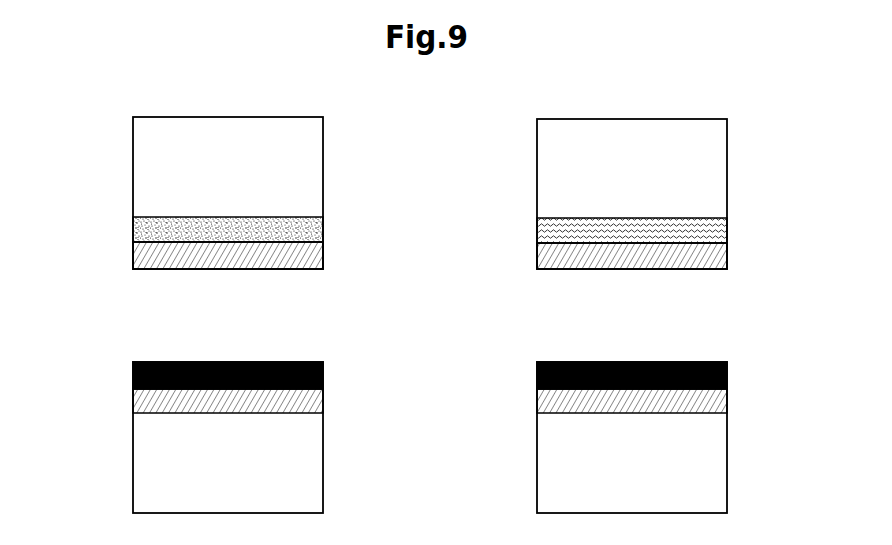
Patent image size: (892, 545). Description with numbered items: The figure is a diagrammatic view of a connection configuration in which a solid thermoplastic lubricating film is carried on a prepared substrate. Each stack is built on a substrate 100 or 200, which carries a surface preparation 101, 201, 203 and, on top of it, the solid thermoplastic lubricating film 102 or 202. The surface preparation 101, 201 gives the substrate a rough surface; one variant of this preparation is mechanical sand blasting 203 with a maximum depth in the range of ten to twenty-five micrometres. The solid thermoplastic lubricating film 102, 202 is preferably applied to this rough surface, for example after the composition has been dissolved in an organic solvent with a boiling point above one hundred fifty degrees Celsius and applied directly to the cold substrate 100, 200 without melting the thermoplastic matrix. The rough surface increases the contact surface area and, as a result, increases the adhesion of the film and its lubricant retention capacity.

The substrate 100 is at (323, 465).
The surface preparation 101 is at (323, 400).
The solid thermoplastic lubricating film 102 is at (133, 375).
The substrate 200 is at (323, 167).
The surface preparation 201 is at (323, 228).
The solid thermoplastic lubricating film 202 is at (133, 255).
The surface preparation by mechanical sand blasting 203 is at (727, 229).